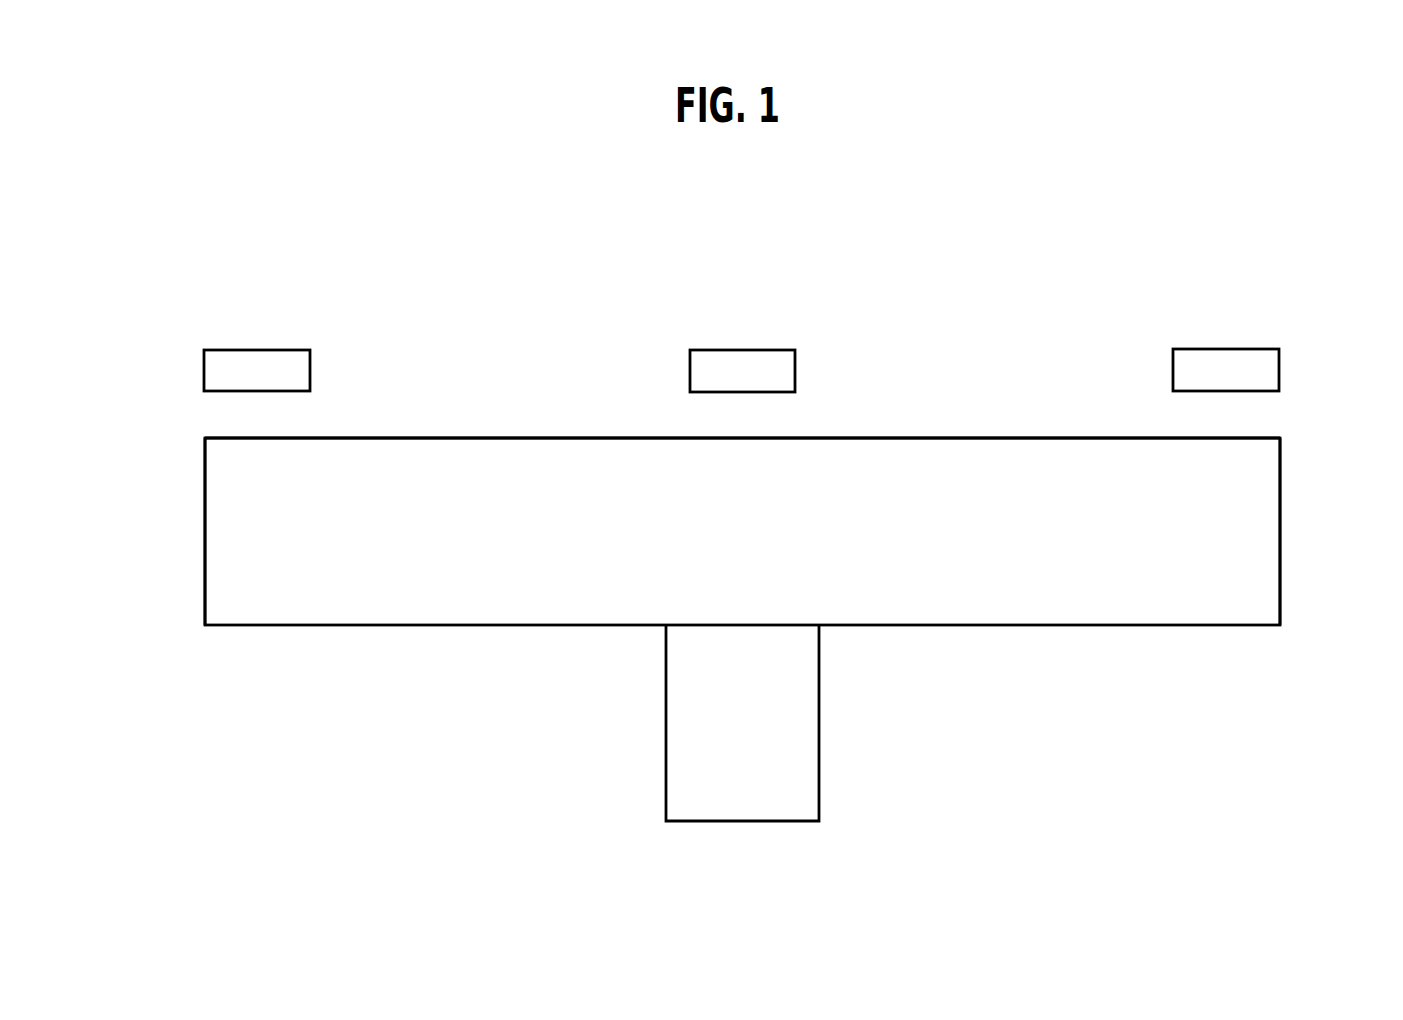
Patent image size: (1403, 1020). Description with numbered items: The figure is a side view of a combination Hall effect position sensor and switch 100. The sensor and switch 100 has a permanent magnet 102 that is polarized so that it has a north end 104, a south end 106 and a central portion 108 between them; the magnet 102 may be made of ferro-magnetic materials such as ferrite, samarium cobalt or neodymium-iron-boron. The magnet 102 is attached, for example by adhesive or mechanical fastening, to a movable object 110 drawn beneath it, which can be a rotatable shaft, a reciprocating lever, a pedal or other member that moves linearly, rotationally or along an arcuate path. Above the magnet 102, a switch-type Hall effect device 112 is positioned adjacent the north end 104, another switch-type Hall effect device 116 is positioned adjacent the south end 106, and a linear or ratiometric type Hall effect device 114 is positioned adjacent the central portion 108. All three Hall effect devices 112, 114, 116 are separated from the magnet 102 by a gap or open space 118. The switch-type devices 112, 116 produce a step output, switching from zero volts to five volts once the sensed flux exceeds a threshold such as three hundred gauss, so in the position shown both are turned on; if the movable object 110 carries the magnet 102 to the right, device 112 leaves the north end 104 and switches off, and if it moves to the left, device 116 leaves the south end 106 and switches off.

The combination Hall effect position sensor and switch 100 is at (393, 205).
The permanent magnet 102 is at (496, 432).
The north end 104 is at (205, 520).
The south end 106 is at (1280, 482).
The central portion 108 is at (583, 437).
The movable object 110 is at (818, 705).
The switch-type Hall effect device 112 is at (245, 350).
The linear type Hall effect device 114 is at (745, 350).
The switch-type Hall effect device 116 is at (1258, 349).
The gap 118 is at (233, 418).